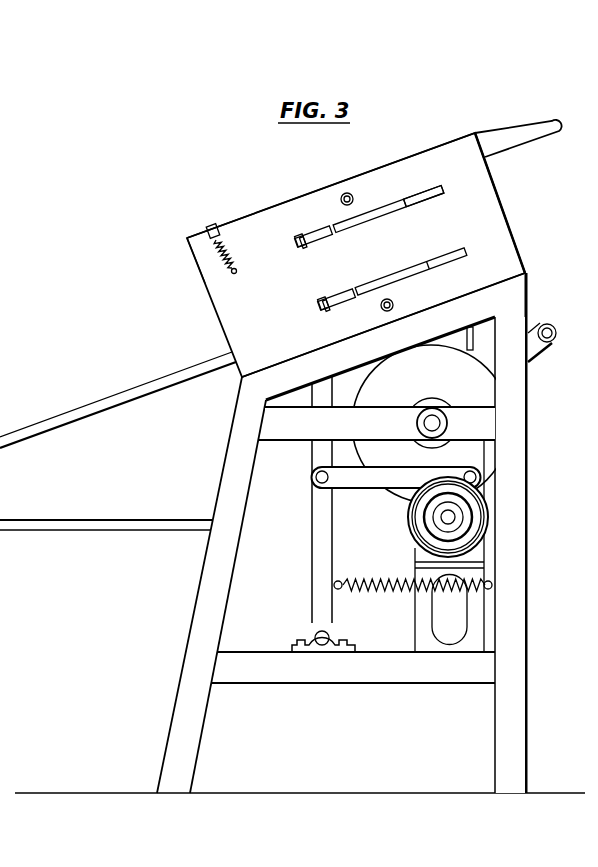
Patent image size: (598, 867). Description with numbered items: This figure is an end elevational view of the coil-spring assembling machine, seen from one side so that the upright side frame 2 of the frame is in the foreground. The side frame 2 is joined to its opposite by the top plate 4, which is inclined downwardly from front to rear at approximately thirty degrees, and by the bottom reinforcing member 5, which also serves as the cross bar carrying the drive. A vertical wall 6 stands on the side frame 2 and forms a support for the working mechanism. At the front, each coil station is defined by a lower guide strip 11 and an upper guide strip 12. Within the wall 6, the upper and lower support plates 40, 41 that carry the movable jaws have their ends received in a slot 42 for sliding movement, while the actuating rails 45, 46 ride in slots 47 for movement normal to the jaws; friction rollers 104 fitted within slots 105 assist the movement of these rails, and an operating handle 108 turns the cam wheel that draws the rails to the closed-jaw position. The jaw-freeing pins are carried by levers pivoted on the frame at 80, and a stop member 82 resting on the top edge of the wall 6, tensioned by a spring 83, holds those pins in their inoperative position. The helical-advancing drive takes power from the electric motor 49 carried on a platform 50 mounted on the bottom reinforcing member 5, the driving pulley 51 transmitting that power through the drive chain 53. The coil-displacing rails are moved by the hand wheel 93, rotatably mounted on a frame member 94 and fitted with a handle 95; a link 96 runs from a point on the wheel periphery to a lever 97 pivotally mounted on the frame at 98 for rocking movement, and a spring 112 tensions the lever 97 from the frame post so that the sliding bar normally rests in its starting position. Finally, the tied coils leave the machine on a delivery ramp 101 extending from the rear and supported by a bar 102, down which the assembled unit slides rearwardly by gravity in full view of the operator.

The side frame 2 is at (522, 650).
The top plate 4 is at (437, 320).
The bottom reinforcing member 5 is at (362, 675).
The vertical wall 6 is at (207, 243).
The lower guide strip 11 is at (513, 220).
The upper guide strip 12 is at (493, 173).
The upper support plate 40 is at (377, 210).
The lower support plate 41 is at (388, 285).
The slot 42 is at (427, 200).
The actuating rail 45 is at (330, 230).
The actuating rail 46 is at (354, 292).
The slot 47 is at (383, 325).
The electric motor 49 is at (490, 540).
The platform 50 is at (487, 566).
The driving pulley 51 is at (462, 519).
The drive chain 53 is at (476, 338).
The pivot 80 is at (347, 193).
The stop member 82 is at (214, 226).
The spring 83 is at (232, 265).
The hand wheel 93 is at (440, 388).
The frame member 94 is at (303, 430).
The handle 95 is at (560, 343).
The link 96 is at (343, 487).
The lever 97 is at (312, 528).
The pivot 98 is at (307, 638).
The delivery ramp 101 is at (72, 412).
The bar 102 is at (133, 523).
The friction roller 104 is at (297, 240).
The slot 105 is at (298, 247).
The operating handle 108 is at (536, 136).
The spring 112 is at (387, 580).